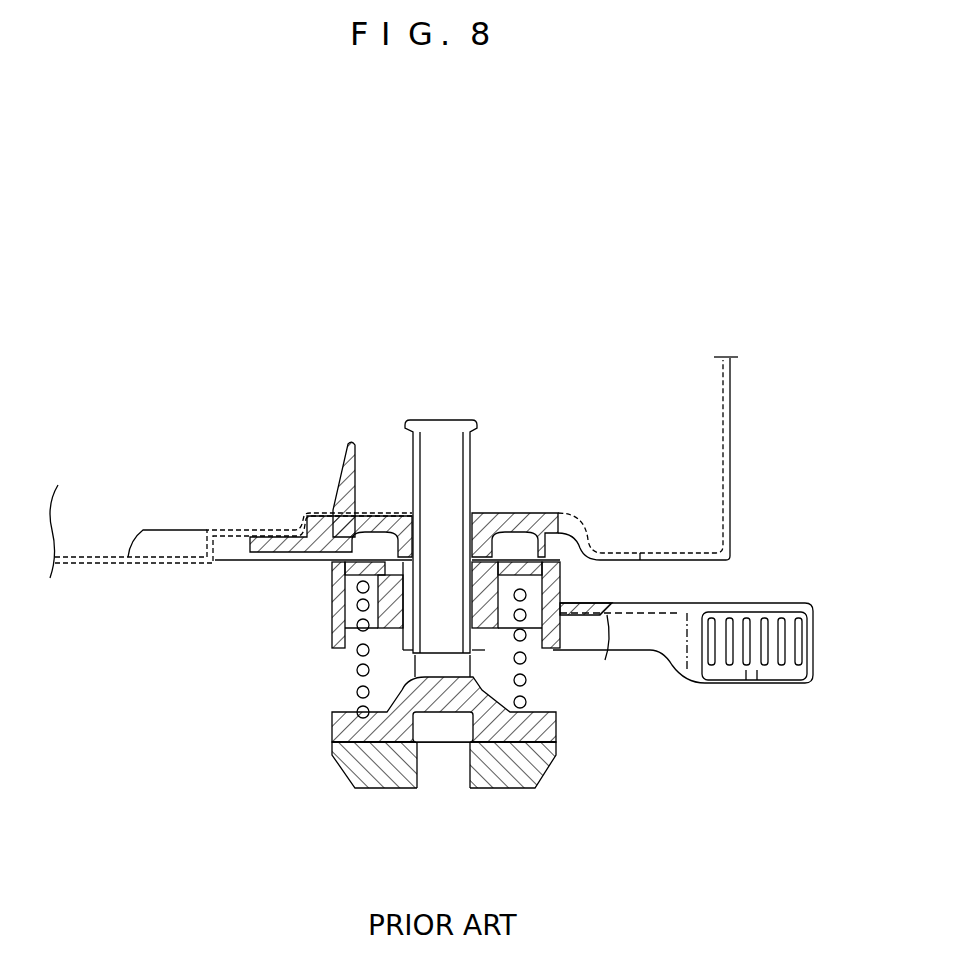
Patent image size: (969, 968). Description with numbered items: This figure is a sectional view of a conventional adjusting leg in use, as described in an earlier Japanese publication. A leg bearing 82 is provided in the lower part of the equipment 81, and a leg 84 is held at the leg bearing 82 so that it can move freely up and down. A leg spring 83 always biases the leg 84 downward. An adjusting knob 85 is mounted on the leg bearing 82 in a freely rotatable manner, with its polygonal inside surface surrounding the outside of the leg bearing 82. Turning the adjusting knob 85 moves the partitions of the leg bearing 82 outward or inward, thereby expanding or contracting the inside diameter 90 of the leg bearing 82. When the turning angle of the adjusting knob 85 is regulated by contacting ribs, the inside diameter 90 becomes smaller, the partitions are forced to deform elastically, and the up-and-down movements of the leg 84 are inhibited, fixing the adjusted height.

The equipment 81 is at (728, 405).
The leg bearing 82 is at (365, 506).
The leg spring 83 is at (357, 670).
The leg 84 is at (459, 418).
The adjusting knob 85 is at (567, 613).
The inside diameter 90 is at (468, 655).